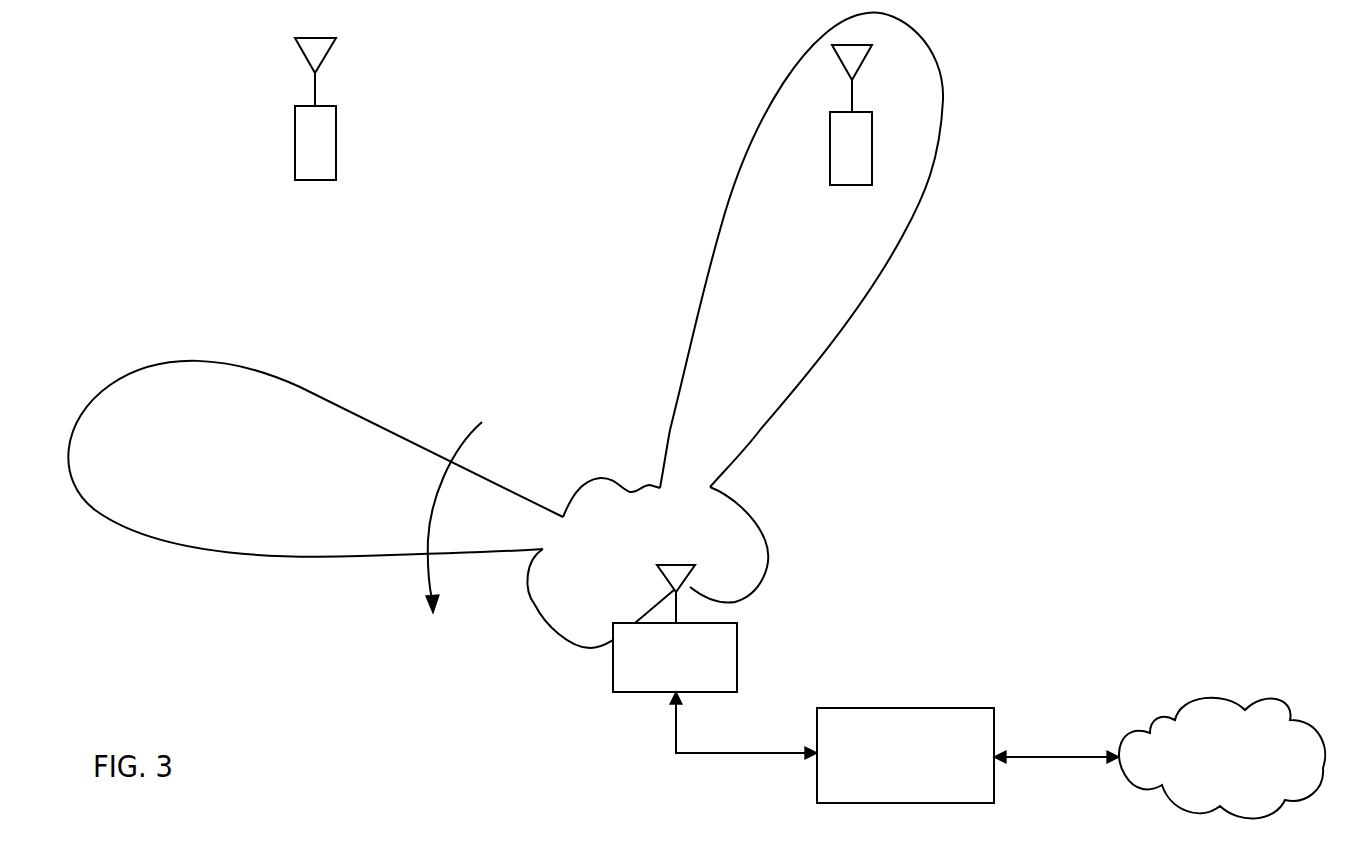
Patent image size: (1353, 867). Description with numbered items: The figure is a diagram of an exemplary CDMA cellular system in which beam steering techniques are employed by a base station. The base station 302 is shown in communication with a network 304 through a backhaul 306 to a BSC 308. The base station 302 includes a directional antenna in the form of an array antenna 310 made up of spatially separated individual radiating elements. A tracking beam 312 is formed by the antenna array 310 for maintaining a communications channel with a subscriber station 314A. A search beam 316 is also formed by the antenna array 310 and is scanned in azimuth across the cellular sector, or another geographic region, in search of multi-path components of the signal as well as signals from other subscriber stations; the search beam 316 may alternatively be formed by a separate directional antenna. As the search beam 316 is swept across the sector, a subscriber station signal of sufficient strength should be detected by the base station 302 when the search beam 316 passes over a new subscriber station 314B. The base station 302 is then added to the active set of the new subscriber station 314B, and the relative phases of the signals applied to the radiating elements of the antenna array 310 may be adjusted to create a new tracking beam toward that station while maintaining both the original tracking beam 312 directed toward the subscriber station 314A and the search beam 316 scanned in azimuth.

The base station 302 is at (647, 692).
The network 304 is at (1290, 720).
The backhaul 306 is at (710, 753).
The BSC 308 is at (920, 708).
The array antenna 310 is at (690, 590).
The tracking beam 312 is at (860, 295).
The subscriber station 314A is at (851, 185).
The new subscriber station 314B is at (313, 180).
The search beam 316 is at (257, 377).